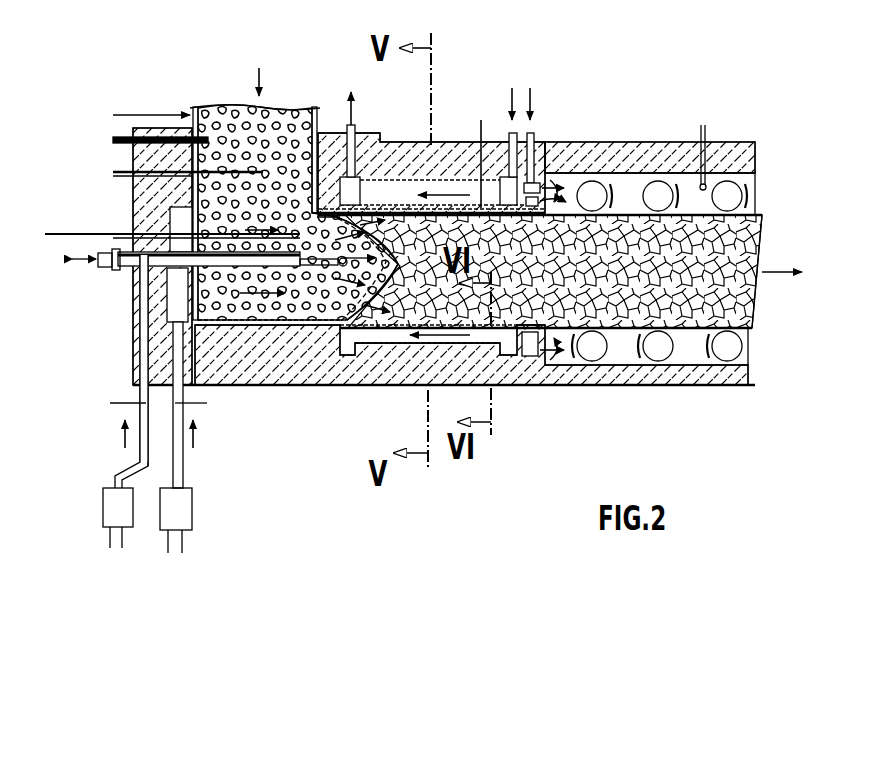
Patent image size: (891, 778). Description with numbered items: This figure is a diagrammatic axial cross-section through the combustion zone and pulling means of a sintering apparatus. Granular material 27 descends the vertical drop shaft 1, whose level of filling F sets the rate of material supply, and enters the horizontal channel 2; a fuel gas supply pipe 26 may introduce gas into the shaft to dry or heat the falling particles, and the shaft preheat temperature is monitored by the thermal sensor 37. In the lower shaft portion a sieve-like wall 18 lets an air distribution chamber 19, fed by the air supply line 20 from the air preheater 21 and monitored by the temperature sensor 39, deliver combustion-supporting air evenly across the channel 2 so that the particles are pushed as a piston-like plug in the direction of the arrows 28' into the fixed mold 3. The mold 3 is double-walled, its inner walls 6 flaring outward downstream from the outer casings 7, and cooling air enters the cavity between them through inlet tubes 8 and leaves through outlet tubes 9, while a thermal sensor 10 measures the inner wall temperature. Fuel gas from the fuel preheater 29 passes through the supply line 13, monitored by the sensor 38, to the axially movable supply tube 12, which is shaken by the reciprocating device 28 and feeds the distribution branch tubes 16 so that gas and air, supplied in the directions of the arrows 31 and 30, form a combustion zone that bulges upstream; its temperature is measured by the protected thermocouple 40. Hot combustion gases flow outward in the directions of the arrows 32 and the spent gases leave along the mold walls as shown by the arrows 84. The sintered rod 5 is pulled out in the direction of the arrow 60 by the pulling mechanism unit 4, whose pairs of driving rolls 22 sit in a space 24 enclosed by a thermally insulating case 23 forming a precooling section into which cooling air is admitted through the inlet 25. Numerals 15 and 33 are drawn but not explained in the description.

The vertical drop shaft 1 is at (240, 186).
The horizontal channel 2 is at (299, 399).
The mold 3 is at (364, 333).
The pulling mechanism unit 4 is at (444, 388).
The molded rod 5 is at (576, 265).
The inner walls 6 is at (455, 144).
The outer walls or casings 7 is at (431, 137).
The inlet tubes 8 is at (504, 130).
The outlet tubes 9 is at (334, 129).
The thermal sensor 10 is at (473, 125).
The supply tube 12 is at (135, 295).
The supply line 13 is at (96, 371).
The mold wall 15 is at (402, 378).
The distribution branch tubes 16 is at (344, 380).
The sieve-like wall 18 is at (127, 222).
The air distribution chamber 19 is at (119, 256).
The air supply line 20 is at (207, 414).
The air preheater 21 is at (201, 520).
The driving rolls 22 is at (584, 271).
The thermally insulating case 23 is at (669, 147).
The precooling space 24 is at (690, 257).
The cooling air inlet 25 is at (552, 122).
The fuel gas supply pipe 26 is at (128, 124).
The granular material 27 is at (294, 176).
The reciprocating device 28 is at (183, 271).
The feed direction arrows 28' is at (270, 365).
The fuel preheater 29 is at (87, 518).
The air supply direction arrow 30 is at (240, 452).
The fuel gas supply direction arrow 31 is at (85, 425).
The combustion gas flow arrows 32 is at (431, 263).
The sensor pin 33 is at (682, 124).
The shaft temperature sensor 37 is at (154, 179).
The fuel gas temperature sensor 38 is at (94, 386).
The air temperature sensor 39 is at (211, 433).
The thermocouple 40 is at (160, 234).
The direction of advance arrow 60 is at (801, 295).
The spent gas flow arrows 84 is at (555, 278).
The level of filling F is at (140, 93).